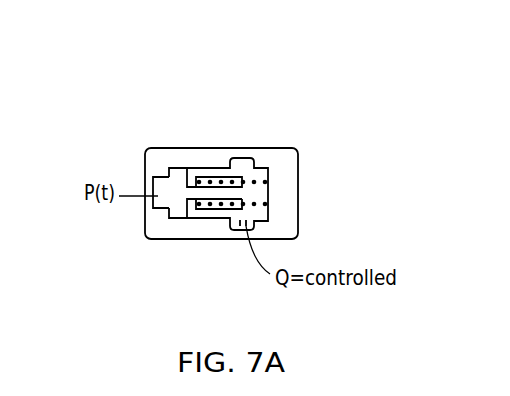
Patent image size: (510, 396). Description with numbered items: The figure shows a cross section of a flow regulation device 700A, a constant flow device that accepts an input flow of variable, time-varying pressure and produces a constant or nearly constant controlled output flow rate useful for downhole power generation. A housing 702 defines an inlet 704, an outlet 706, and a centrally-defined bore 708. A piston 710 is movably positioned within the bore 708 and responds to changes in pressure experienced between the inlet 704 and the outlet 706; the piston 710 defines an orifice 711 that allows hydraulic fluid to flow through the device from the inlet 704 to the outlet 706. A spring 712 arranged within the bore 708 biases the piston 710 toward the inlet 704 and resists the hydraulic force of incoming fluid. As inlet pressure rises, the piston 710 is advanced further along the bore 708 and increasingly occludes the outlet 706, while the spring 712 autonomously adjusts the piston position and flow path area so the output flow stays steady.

The flow regulation device 700A is at (158, 71).
The housing 702 is at (160, 147).
The inlet 704 is at (153, 184).
The outlet 706 is at (238, 224).
The bore 708 is at (172, 205).
The piston 710 is at (188, 208).
The orifice 711 is at (187, 195).
The spring 712 is at (250, 177).